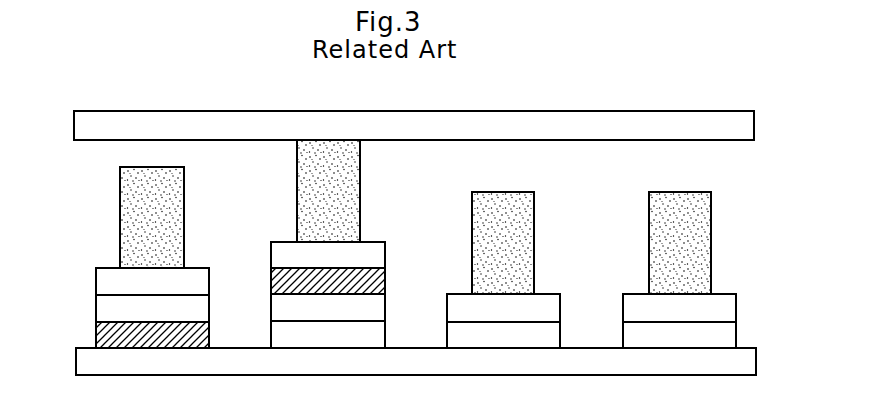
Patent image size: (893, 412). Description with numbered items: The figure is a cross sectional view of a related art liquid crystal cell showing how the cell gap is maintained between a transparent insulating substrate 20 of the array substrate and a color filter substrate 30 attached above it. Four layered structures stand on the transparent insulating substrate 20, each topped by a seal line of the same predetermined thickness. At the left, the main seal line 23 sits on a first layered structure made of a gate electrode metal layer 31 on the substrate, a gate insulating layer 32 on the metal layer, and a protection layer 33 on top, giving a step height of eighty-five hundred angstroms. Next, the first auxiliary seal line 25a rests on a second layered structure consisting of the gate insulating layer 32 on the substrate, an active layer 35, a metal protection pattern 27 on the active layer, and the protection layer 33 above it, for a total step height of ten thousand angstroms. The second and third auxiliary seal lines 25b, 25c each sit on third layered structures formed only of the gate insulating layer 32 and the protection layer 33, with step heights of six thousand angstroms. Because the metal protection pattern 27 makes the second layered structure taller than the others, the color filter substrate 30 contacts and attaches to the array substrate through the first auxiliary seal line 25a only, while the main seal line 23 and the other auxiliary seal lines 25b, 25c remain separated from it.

The transparent insulating substrate 20 is at (748, 361).
The main seal line 23 is at (132, 218).
The first auxiliary seal line 25a is at (348, 178).
The second auxiliary seal line 25b is at (522, 245).
The third auxiliary seal line 25c is at (698, 243).
The metal protection pattern 27 is at (380, 282).
The color filter substrate 30 is at (754, 124).
The gate electrode metal layer 31 is at (97, 332).
The gate insulating layer 32 is at (105, 308).
The protection layer 33 is at (103, 283).
The active layer 35 is at (374, 309).